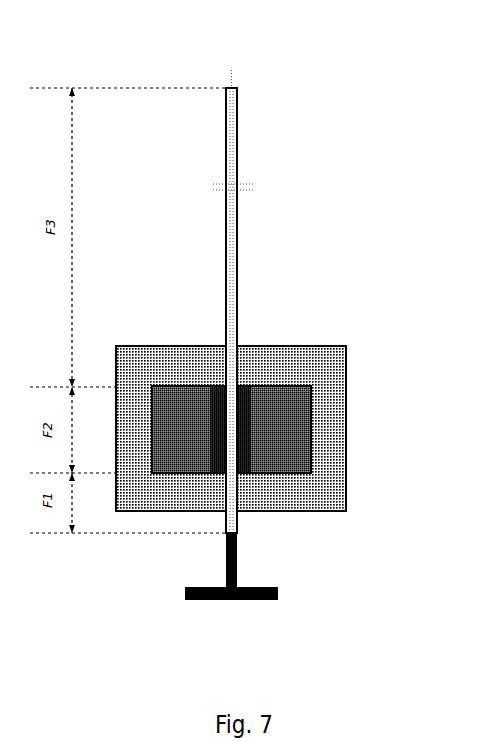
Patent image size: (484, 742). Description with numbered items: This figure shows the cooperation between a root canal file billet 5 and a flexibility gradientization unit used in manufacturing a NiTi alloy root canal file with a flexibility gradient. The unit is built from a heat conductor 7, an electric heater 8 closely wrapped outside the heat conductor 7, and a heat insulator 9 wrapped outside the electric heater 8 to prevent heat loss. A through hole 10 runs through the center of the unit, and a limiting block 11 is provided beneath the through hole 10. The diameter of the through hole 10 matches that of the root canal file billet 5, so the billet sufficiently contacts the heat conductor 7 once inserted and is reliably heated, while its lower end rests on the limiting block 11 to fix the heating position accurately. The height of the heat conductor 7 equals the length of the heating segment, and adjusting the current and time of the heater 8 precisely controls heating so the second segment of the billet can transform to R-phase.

The root canal file billet 5 is at (232, 143).
The heat conductor 7 is at (250, 437).
The electric heater 8 is at (283, 462).
The heat insulator 9 is at (283, 503).
The through hole 10 is at (238, 372).
The limiting block 11 is at (238, 557).